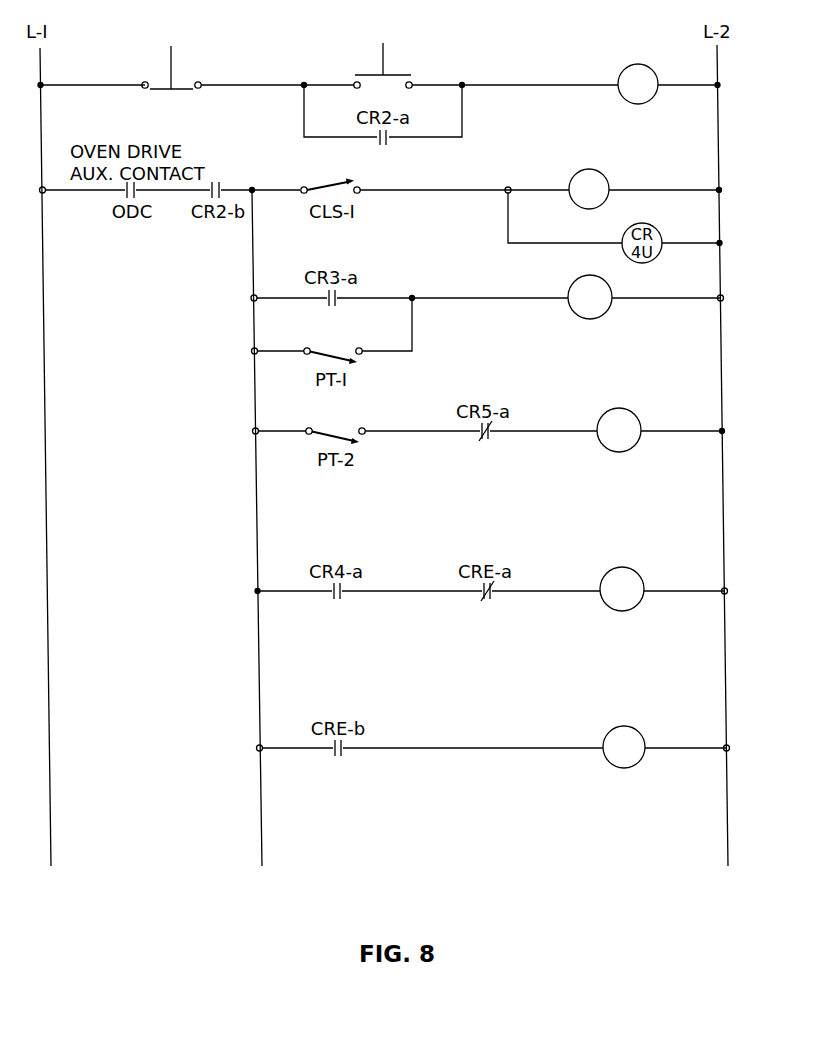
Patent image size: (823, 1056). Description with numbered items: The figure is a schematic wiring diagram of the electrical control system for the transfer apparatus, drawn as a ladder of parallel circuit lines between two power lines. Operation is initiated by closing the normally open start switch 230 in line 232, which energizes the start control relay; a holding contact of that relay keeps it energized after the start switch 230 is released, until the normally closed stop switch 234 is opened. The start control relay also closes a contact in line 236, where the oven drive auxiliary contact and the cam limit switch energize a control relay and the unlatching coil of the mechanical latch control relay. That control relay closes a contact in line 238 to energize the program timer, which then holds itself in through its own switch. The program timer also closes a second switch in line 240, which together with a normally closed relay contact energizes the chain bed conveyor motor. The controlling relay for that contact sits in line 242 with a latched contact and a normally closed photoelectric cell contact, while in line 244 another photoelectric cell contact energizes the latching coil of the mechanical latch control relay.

The start switch 230 is at (397, 73).
The line 232 is at (512, 82).
The stop switch 234 is at (181, 77).
The line 236 is at (418, 187).
The line 238 is at (448, 295).
The line 240 is at (522, 428).
The line 242 is at (532, 587).
The line 244 is at (493, 745).